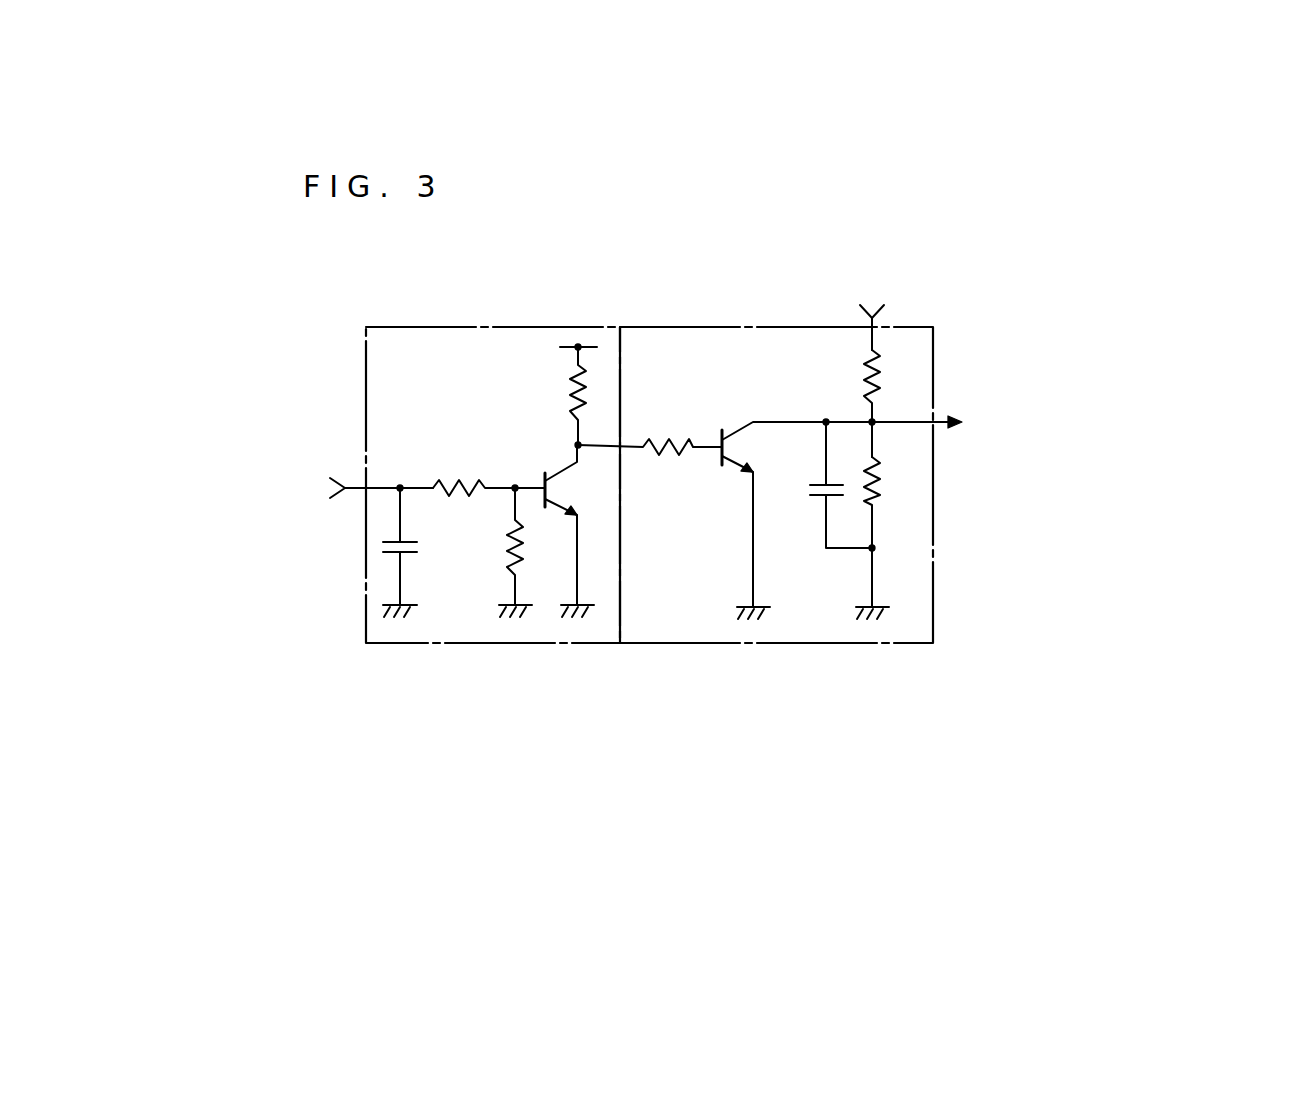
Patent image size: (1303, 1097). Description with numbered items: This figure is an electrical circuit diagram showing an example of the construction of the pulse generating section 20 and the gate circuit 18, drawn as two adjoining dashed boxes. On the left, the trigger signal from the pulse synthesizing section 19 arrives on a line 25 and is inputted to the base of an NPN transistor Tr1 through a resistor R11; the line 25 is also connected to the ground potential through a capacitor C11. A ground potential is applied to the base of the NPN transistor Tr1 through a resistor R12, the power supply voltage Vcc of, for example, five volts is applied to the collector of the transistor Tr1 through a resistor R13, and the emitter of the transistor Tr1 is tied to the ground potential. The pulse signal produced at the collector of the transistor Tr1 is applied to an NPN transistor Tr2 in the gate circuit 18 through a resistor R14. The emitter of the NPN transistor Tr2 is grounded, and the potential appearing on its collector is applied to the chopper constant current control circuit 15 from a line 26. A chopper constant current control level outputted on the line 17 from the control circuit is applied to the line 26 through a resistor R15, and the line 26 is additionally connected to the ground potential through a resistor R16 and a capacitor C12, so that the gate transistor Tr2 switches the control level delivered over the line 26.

The chopper constant current control circuit 15 is at (1139, 437).
The line 17 is at (874, 310).
The gate circuit 18 is at (887, 633).
The pulse synthesizing section 19 is at (204, 474).
The pulse generating section 20 is at (492, 632).
The line 25 is at (380, 487).
The line 26 is at (918, 420).
The resistor R11 is at (458, 483).
The resistor R12 is at (510, 555).
The resistor R13 is at (572, 408).
The resistor R14 is at (670, 440).
The resistor R15 is at (877, 372).
The resistor R16 is at (873, 488).
The capacitor C11 is at (420, 550).
The capacitor C12 is at (808, 490).
The NPN transistor Tr1 is at (560, 489).
The NPN transistor Tr2 is at (732, 467).